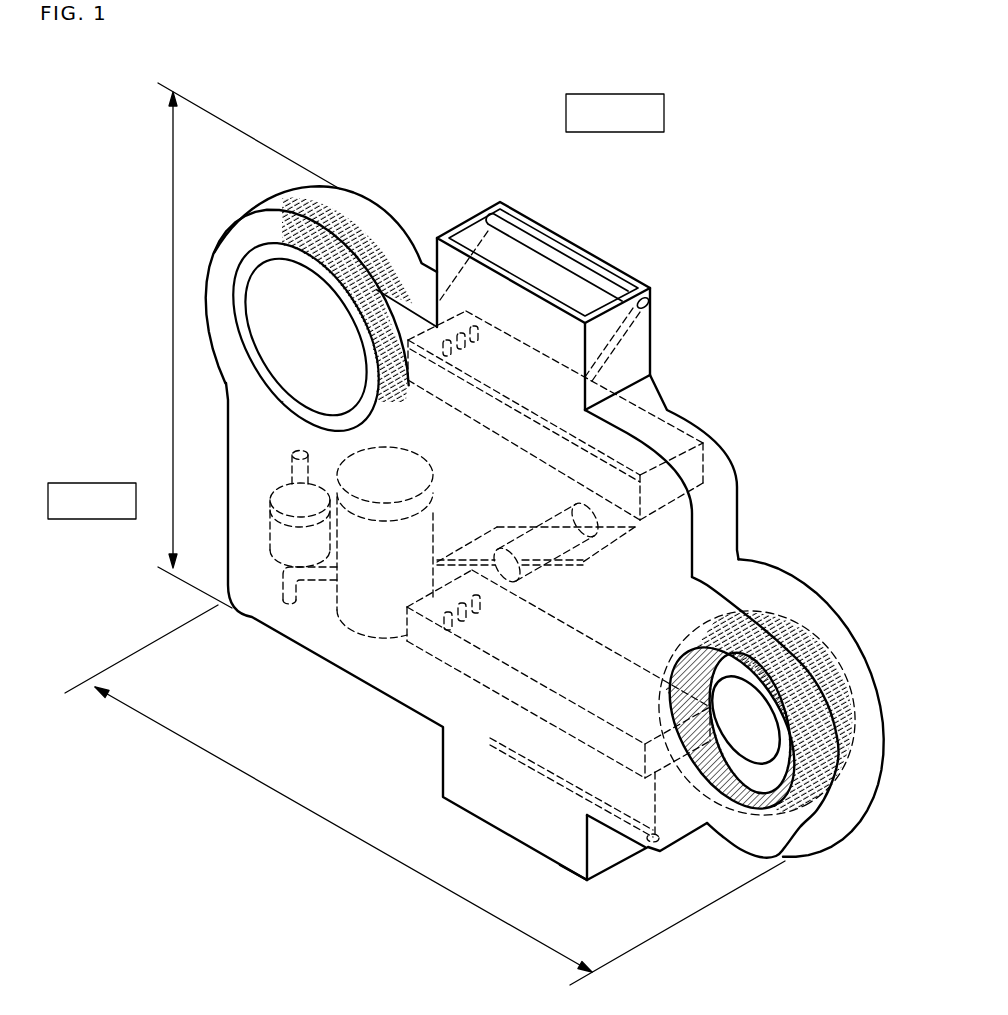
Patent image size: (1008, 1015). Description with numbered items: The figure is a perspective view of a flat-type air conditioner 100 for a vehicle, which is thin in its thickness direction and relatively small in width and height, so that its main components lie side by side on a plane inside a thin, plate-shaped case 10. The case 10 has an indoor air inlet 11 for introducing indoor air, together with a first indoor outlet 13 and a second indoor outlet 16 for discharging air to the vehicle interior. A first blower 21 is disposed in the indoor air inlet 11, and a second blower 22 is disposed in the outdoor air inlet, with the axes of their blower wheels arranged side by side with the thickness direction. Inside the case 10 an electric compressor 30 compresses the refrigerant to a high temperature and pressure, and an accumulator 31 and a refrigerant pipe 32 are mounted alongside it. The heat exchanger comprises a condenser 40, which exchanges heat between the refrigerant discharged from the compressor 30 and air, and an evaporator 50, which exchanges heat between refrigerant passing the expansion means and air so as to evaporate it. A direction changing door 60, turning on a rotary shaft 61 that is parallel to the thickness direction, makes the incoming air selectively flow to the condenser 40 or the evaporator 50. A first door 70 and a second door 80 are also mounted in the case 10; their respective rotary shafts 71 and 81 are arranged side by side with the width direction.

The air conditioner 100 is at (760, 336).
The case 10 is at (740, 505).
The indoor air inlet 11 is at (756, 728).
The first indoor outlet 13 is at (533, 269).
The second indoor outlet 16 is at (565, 870).
The first blower 21 is at (773, 795).
The second blower 22 is at (363, 245).
The compressor 30 is at (387, 623).
The accumulator 31 is at (280, 540).
The refrigerant pipe 32 is at (293, 603).
The condenser 40 is at (585, 443).
The evaporator 50 is at (460, 665).
The direction changing door 60 is at (593, 535).
The rotary shaft 61 is at (507, 567).
The first door 70 is at (563, 288).
The rotary shaft 71 is at (648, 295).
The second door 80 is at (618, 790).
The rotary shaft 81 is at (650, 838).